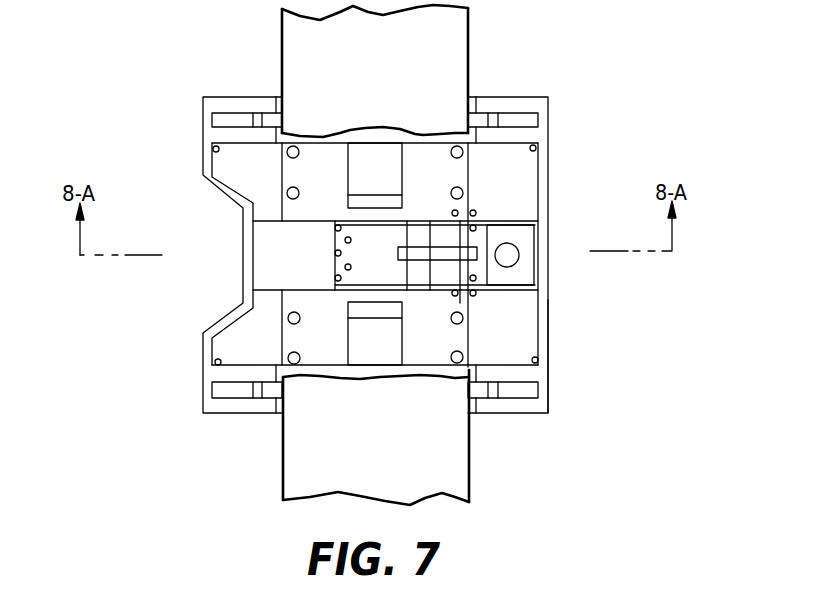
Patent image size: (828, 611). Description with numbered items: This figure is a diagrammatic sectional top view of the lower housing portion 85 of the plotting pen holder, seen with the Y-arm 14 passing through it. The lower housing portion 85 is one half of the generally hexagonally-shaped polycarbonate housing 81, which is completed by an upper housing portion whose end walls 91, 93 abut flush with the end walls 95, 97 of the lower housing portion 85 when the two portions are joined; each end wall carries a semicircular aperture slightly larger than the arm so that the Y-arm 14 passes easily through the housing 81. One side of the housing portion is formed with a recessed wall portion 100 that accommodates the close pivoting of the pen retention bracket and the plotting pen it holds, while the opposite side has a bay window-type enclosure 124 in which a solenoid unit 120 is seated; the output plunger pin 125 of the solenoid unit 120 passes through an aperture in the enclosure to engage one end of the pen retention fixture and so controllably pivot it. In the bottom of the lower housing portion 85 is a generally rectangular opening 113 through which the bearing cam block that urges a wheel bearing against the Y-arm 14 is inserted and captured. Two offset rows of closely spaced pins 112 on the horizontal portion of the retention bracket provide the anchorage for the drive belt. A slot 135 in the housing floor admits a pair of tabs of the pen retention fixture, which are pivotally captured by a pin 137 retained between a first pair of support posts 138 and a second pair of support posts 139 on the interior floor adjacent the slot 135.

The Y-arm 14 is at (453, 68).
The housing 81 is at (203, 168).
The lower housing portion 85 is at (556, 378).
The end wall 91 is at (355, 79).
The end wall 93 is at (237, 118).
The end wall 95 is at (325, 363).
The end wall 97 is at (237, 362).
The recessed wall portion 100 is at (242, 228).
The pins or posts 112 is at (330, 279).
The rectangular opening 113 is at (358, 357).
The solenoid unit 120 is at (520, 237).
The bay window-type enclosure 124 is at (549, 293).
The output plunger pin 125 is at (508, 255).
The slot 135 is at (258, 282).
The pin 137 is at (460, 303).
The first pair of support posts 138 is at (477, 213).
The second pair of support posts 139 is at (477, 295).